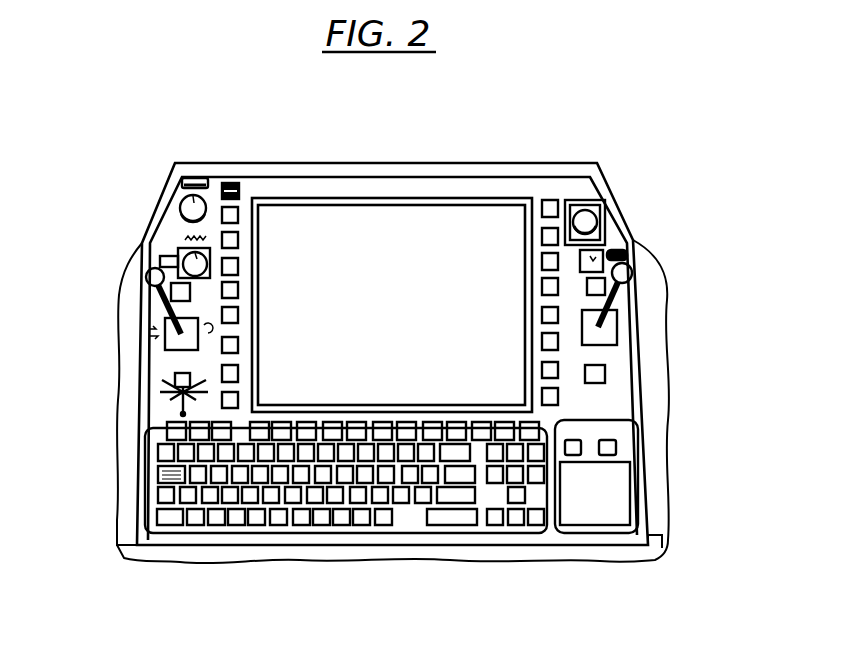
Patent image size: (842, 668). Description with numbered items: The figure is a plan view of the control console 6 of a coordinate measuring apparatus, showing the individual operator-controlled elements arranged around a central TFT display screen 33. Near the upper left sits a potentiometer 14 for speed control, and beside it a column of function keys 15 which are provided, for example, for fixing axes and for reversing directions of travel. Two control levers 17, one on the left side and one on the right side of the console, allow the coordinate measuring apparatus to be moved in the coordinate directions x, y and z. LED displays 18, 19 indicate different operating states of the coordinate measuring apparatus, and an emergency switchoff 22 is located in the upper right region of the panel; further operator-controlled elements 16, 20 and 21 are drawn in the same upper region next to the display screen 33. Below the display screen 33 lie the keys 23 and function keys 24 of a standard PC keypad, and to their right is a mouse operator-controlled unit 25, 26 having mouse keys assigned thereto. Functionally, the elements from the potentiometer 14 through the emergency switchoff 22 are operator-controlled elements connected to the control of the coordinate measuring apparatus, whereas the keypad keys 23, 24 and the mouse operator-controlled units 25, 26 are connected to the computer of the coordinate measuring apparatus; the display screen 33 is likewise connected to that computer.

The control console 6 is at (655, 413).
The potentiometer 14 is at (185, 179).
The function keys 15 is at (228, 183).
The override knob 16 is at (160, 258).
The control levers 17 is at (150, 333).
The LED display 18 is at (163, 386).
The LED display 19 is at (622, 390).
The switch 20 is at (603, 252).
The soft key column 21 is at (550, 200).
The emergency switchoff 22 is at (580, 203).
The keys 23 is at (158, 478).
The function keys 24 is at (297, 523).
The mouse operator-controlled unit 25 is at (578, 467).
The mouse operator-controlled unit 26 is at (645, 522).
The TFT display screen 33 is at (367, 232).